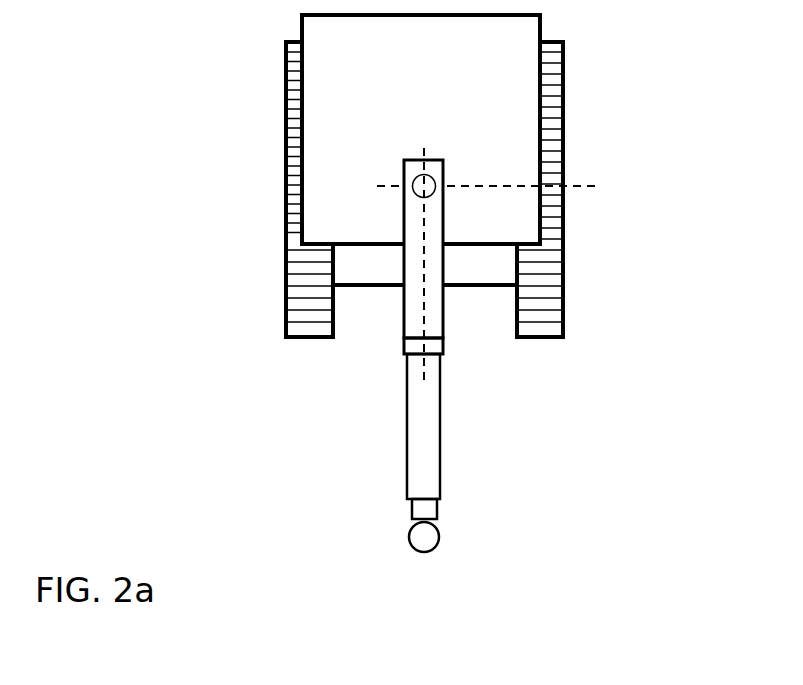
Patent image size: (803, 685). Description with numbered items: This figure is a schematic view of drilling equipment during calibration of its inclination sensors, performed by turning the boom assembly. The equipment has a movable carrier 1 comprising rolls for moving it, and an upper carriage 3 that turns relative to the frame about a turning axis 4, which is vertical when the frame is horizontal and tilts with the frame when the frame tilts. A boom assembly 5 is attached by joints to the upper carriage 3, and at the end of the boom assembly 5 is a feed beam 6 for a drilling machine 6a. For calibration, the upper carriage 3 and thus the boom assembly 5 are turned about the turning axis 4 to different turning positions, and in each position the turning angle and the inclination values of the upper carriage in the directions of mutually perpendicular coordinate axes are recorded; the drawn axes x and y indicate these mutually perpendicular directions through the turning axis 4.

The movable carrier 1 is at (422, 291).
The upper carriage 3 is at (452, 110).
The turning axis 4 is at (423, 186).
The boom assembly 5 is at (331, 313).
The feed beam 6 is at (423, 508).
The drilling machine 6a is at (425, 538).
The x axis x is at (425, 372).
The y axis y is at (568, 183).